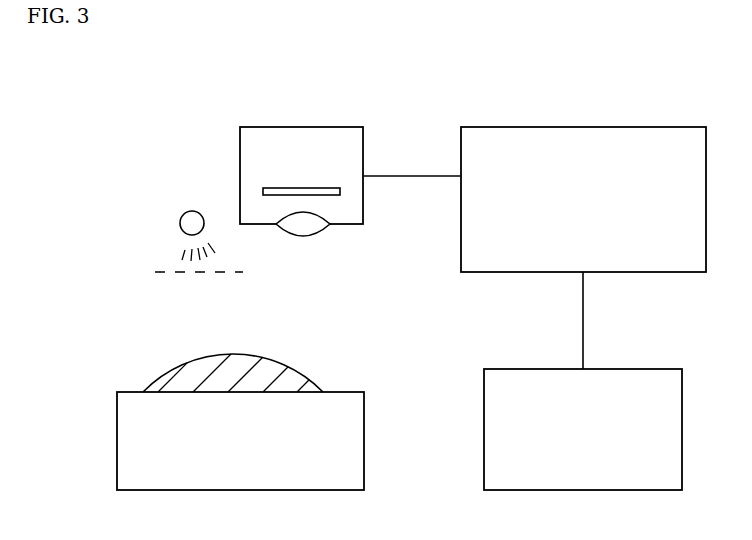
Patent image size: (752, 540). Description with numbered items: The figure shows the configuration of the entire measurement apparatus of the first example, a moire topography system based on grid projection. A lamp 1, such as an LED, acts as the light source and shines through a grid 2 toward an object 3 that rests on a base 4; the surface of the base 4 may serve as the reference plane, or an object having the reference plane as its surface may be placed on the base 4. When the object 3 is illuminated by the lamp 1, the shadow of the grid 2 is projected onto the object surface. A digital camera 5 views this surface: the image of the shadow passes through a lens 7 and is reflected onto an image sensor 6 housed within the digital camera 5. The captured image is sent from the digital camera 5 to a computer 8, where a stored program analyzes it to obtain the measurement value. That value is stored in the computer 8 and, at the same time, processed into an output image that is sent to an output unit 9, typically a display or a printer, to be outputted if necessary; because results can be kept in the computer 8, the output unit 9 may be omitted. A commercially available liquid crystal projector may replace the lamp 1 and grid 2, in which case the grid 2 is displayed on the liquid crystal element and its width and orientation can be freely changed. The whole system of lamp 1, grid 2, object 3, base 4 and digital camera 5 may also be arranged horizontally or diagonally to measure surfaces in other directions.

The lamp 1 is at (173, 215).
The grid 2 is at (160, 263).
The object 3 is at (163, 371).
The base 4 is at (370, 428).
The digital camera 5 is at (300, 127).
The image sensor 6 is at (280, 184).
The lens 7 is at (315, 237).
The computer 8 is at (590, 124).
The output unit 9 is at (612, 364).